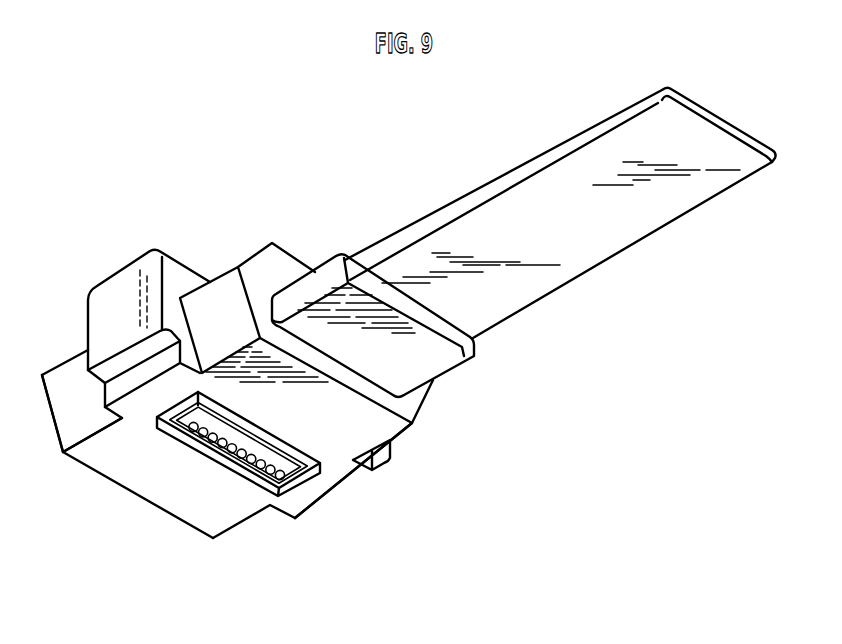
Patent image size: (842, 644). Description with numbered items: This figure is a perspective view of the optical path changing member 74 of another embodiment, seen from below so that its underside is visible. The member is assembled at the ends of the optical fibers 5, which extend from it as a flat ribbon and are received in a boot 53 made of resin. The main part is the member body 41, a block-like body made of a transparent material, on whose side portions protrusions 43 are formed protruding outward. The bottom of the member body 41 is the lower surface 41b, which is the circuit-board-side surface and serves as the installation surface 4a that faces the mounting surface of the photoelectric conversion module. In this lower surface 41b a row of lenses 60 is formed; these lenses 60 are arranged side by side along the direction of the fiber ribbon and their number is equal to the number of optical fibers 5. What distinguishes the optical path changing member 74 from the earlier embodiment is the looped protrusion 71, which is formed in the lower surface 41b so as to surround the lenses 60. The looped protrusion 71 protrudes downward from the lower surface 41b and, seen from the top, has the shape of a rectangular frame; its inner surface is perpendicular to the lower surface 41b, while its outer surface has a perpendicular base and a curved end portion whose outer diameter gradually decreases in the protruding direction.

The optical path changing member 74 is at (266, 199).
The protrusion 43 is at (118, 290).
The member body 41 is at (198, 532).
The installation surface 4a is at (108, 458).
The lower surface 41b is at (247, 508).
The looped protrusion 71 is at (297, 488).
The boot 53 is at (450, 370).
The optical fiber 5 is at (590, 268).
The lens 60 is at (231, 458).